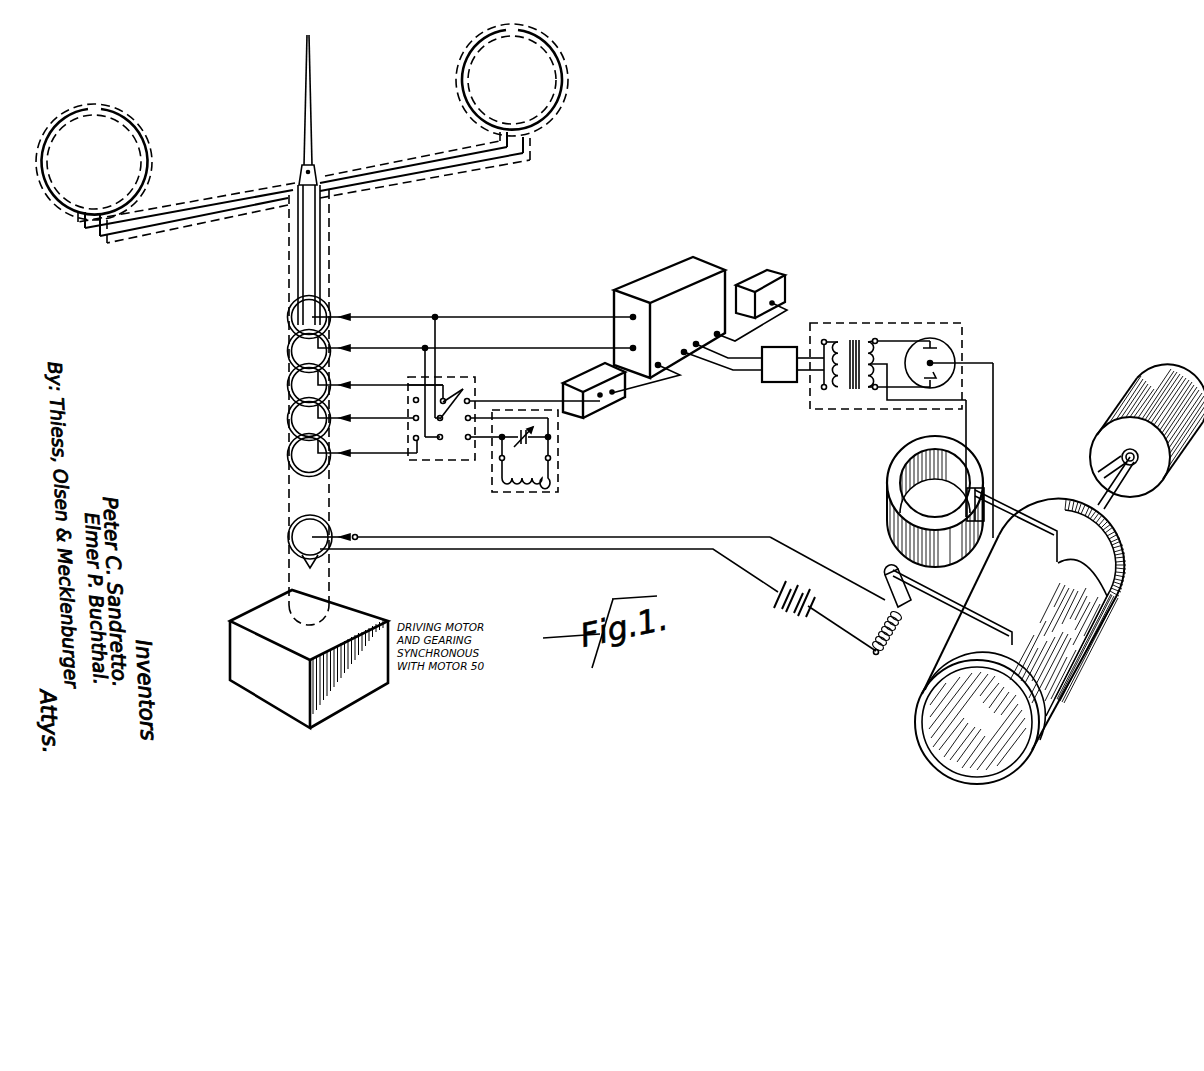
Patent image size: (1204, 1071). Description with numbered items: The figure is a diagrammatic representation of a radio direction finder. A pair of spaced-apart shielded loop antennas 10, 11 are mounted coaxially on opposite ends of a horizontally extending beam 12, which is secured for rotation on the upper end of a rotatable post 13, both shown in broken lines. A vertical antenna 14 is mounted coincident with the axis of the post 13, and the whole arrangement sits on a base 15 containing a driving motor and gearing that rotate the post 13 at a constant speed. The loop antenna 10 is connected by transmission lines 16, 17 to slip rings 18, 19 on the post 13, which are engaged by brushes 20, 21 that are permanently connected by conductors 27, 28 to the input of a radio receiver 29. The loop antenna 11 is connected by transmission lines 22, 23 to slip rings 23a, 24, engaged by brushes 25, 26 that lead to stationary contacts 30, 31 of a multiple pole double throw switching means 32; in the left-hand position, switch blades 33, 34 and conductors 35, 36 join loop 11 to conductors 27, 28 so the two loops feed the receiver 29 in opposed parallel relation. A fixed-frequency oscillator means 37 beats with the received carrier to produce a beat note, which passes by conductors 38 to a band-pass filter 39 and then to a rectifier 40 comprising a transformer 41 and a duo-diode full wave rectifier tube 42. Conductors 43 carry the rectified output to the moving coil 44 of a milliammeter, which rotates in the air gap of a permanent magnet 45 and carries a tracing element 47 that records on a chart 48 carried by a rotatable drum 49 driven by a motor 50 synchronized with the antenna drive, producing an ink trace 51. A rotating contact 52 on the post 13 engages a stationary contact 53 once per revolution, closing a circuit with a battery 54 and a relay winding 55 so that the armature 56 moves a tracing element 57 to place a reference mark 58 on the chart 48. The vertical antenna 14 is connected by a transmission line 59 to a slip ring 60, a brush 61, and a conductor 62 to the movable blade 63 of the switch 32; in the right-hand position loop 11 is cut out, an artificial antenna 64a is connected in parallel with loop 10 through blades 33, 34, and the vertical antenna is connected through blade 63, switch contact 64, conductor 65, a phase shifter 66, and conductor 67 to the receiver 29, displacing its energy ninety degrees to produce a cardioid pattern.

The shielded loop antenna 10 is at (560, 78).
The shielded loop antenna 11 is at (135, 125).
The horizontally extending beam 12 is at (170, 232).
The rotatable post 13 is at (288, 270).
The vertical antenna 14 is at (310, 100).
The base 15 is at (245, 614).
The transmission line 16 is at (387, 170).
The transmission line 17 is at (446, 163).
The slip ring 18 is at (330, 343).
The slip ring 19 is at (326, 302).
The brush 20 is at (340, 350).
The brush 21 is at (352, 316).
The transmission line 22 is at (215, 200).
The transmission line 23 is at (188, 216).
The slip ring 23a is at (328, 472).
The slip ring 24 is at (326, 414).
The brush 25 is at (345, 450).
The brush 26 is at (330, 440).
The conductor 27 is at (498, 348).
The conductor 28 is at (492, 316).
The radio receiver 29 is at (668, 270).
The stationary contact 30 is at (413, 437).
The stationary contact 31 is at (412, 418).
The multiple pole double throw switching or coupling means 32 is at (428, 417).
The switch blade 33 is at (443, 437).
The switch blade 34 is at (442, 419).
The conductor 35 is at (422, 358).
The conductor 36 is at (437, 360).
The oscillator means 37 is at (775, 272).
The conductors 38 is at (730, 366).
The band-pass filter 39 is at (785, 345).
The rectifier 40 is at (930, 323).
The transformer 41 is at (848, 340).
The full wave rectifier tube 42 is at (950, 358).
The conductors 43 is at (968, 418).
The winding (moving coil) 44 is at (966, 503).
The permanent magnet 45 is at (888, 480).
The tracing element 47 is at (1015, 520).
The chart or recording surface 48 is at (1100, 640).
The rotatable drum 49 is at (1125, 547).
The motor 50 is at (1150, 366).
The ink trace 51 is at (1125, 581).
The rotating contact 52 is at (326, 527).
The stationary contact 53 is at (353, 536).
The battery 54 is at (775, 600).
The energizing winding of relay 55 is at (890, 645).
The armature 56 is at (911, 596).
The tracing element 57 is at (992, 620).
The reference mark 58 is at (1060, 703).
The transmission line 59 is at (310, 258).
The slip ring 60 is at (309, 377).
The brush 61 is at (345, 384).
The conductor 62 is at (410, 384).
The movable blade (knife blade) 63 is at (462, 390).
The switch contact 64 is at (478, 398).
The artificial antenna 64a is at (559, 454).
The conductor 65 is at (522, 409).
The phase shifter or coupling means 66 is at (620, 410).
The conductor 67 is at (668, 384).